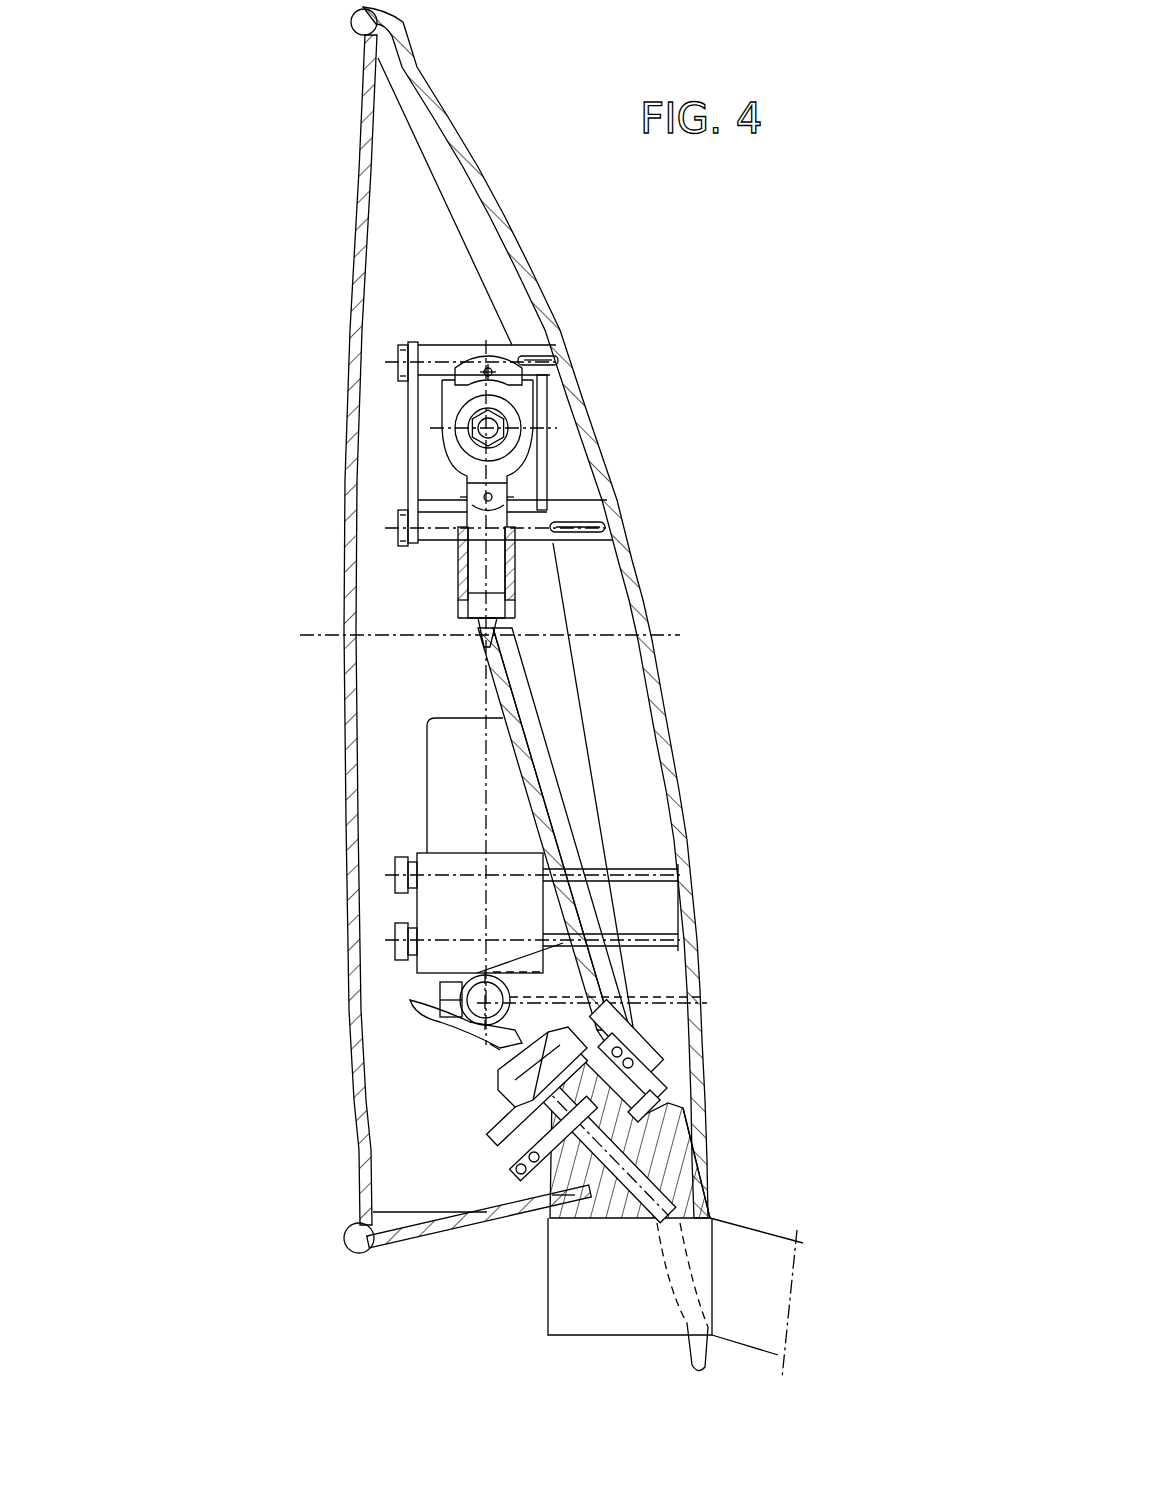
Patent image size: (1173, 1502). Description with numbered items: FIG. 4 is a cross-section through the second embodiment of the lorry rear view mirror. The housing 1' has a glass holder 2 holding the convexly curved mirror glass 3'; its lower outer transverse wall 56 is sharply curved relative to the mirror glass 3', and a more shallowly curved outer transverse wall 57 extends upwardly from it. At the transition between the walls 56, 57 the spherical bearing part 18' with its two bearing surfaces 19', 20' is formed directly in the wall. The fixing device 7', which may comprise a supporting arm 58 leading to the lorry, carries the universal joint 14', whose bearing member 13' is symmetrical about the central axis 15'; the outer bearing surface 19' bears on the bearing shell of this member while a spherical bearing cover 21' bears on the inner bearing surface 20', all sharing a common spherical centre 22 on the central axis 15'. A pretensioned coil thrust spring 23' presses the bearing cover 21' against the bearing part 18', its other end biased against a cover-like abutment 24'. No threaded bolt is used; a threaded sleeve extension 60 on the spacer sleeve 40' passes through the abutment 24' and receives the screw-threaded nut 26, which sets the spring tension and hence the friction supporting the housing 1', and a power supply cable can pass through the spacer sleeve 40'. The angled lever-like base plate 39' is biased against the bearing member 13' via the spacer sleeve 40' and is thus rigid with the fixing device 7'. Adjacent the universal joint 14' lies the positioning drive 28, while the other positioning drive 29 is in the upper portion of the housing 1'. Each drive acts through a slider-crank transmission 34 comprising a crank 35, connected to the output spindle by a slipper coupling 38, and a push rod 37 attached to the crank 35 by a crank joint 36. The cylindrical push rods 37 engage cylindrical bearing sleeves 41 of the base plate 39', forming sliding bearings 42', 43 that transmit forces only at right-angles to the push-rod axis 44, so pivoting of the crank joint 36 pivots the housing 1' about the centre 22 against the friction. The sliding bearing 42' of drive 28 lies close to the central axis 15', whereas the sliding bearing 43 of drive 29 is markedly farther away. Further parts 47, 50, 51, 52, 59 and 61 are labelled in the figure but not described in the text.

The housing 1' is at (541, 612).
The glass holder 2 is at (360, 22).
The mirror glass 3' is at (313, 630).
The fixing device 7' is at (779, 1219).
The bearing member 13' is at (668, 1140).
The universal joint 14' is at (735, 1163).
The central axis 15' is at (491, 1066).
The spherical bearing part 18' is at (581, 1240).
The outer bearing surface 19' is at (707, 1112).
The inner bearing surface 20' is at (692, 1068).
The bearing cover 21' is at (688, 1038).
The spherical centre 22 is at (415, 1016).
The coil thrust spring 23' is at (515, 1151).
The cover-like abutment 24' is at (510, 1101).
The screw-threaded nut 26 is at (515, 1097).
The positioning drive 28 is at (425, 818).
The positioning drive 29 is at (430, 332).
The slider-crank transmission 34 is at (547, 443).
The crank 35 is at (497, 472).
The crank joint 36 is at (477, 498).
The push rod 37 is at (473, 586).
The slipper coupling 38 is at (465, 413).
The base plate 39' is at (692, 1017).
The spacer sleeve 40' is at (580, 1181).
The cylindrical bearing sleeve 41 is at (510, 602).
The sliding bearing 42' is at (623, 986).
The sliding bearing 43 is at (517, 567).
The axis of push rod 44 is at (487, 567).
The strut 47 is at (483, 680).
The tension member 50 is at (465, 345).
The plate 51 is at (408, 457).
The bolts 52 is at (398, 345).
The lower outer transverse wall 56 is at (458, 1230).
The outer transverse wall 57 is at (637, 598).
The supporting arm 58 is at (760, 1282).
The housing bolts 59 is at (407, 910).
The threaded sleeve extension 60 is at (490, 1048).
The tube 61 is at (690, 1360).